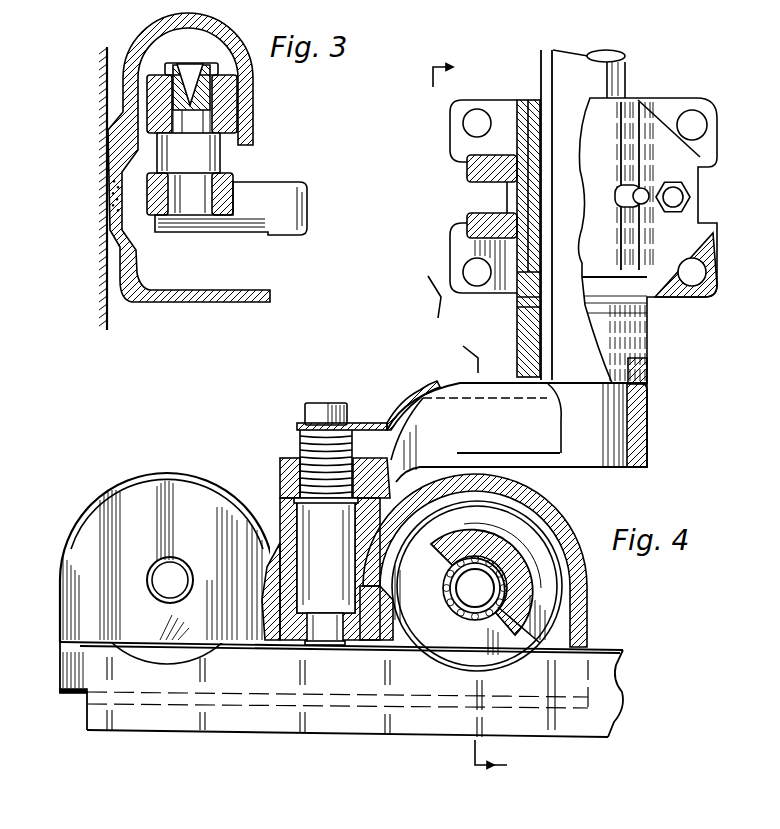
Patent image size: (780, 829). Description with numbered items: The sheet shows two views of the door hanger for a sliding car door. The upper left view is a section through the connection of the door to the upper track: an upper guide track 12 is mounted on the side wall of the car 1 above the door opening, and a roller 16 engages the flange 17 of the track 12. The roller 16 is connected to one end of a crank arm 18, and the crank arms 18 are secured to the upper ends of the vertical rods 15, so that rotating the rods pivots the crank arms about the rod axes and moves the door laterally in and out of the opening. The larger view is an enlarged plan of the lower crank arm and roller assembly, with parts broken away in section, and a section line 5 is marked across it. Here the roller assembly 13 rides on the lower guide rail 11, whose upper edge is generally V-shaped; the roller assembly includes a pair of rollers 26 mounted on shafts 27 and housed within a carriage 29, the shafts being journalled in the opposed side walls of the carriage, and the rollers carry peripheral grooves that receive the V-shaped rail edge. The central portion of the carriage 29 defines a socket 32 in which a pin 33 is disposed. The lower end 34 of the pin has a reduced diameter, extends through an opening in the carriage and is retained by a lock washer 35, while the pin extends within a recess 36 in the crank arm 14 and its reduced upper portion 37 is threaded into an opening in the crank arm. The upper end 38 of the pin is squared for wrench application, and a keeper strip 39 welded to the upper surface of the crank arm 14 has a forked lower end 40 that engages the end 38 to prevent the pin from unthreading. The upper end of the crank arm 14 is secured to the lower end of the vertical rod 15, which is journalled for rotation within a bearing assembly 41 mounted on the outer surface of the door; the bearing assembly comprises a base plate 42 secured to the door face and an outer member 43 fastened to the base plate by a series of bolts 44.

In FIG. 3, the car 1 is at (108, 292).
In FIG. 3, the upper guide track 12 is at (150, 291).
In FIG. 3, the roller 16 is at (225, 124).
In FIG. 3, the flange 17 is at (250, 97).
In FIG. 3, the crank arm 18 is at (270, 193).
In FIG. 4, the section line 5- 5 is at (478, 411).
In FIG. 4, the lower guide rail 11 is at (85, 720).
In FIG. 4, the roller assembly 13 is at (101, 506).
In FIG. 4, the crank arm 14 is at (458, 384).
In FIG. 4, the vertical rod 15 is at (626, 78).
In FIG. 4, the roller 26 is at (160, 653).
In FIG. 4, the shaft 27 is at (200, 553).
In FIG. 4, the carriage 29 is at (190, 465).
In FIG. 4, the socket 32 is at (360, 603).
In FIG. 4, the pin 33 is at (300, 572).
In FIG. 4, the lower end of the pin 34 is at (330, 625).
In FIG. 4, the lock washer 35 is at (343, 645).
In FIG. 4, the recess 36 is at (280, 492).
In FIG. 4, the upper portion of the pin 37 is at (300, 448).
In FIG. 4, the upper end of the pin 38 is at (342, 405).
In FIG. 4, the keeper strip 39 is at (412, 404).
In FIG. 4, the lower end of the keeper strip 40 is at (297, 426).
In FIG. 4, the bearing assembly 41 is at (673, 285).
In FIG. 4, the base plate 42 is at (497, 103).
In FIG. 4, the outer member 43 is at (680, 155).
In FIG. 4, the bolt 44 is at (688, 197).